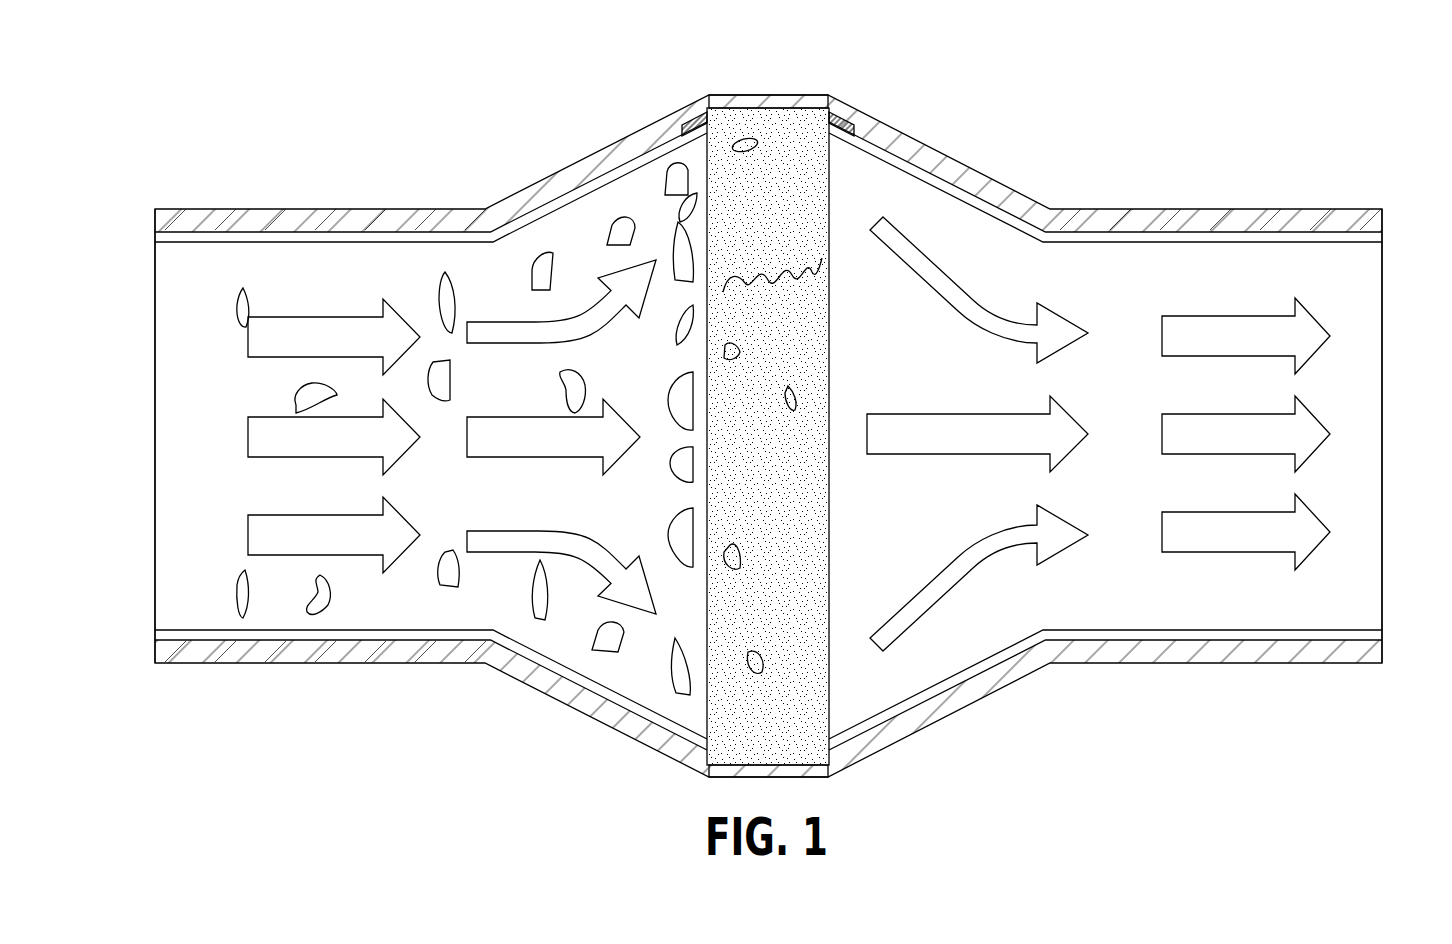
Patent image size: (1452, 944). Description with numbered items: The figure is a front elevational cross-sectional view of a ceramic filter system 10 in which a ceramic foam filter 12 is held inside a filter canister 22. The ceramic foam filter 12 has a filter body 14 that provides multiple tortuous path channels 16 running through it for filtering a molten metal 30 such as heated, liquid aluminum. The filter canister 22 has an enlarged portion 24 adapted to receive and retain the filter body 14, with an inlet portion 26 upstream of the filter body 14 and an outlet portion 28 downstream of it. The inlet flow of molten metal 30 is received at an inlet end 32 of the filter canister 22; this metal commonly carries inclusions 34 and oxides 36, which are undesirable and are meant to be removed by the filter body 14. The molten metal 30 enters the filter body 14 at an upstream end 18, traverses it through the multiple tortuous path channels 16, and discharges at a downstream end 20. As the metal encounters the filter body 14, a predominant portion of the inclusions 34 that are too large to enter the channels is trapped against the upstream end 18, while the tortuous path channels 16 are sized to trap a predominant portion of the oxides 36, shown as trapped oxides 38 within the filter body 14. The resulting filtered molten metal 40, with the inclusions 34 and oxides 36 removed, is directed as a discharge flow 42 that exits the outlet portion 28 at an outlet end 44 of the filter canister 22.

The ceramic filter system 10 is at (1158, 107).
The ceramic foam filter 12 is at (793, 105).
The filter body 14 is at (769, 145).
The multiple tortuous path channels 16 is at (822, 260).
The upstream end 18 is at (683, 125).
The downstream end 20 is at (843, 127).
The filter canister 22 is at (1045, 182).
The enlarged portion 24 is at (593, 167).
The inlet portion 26 is at (284, 222).
The outlet portion 28 is at (1122, 220).
The molten metal 30 is at (248, 537).
The inlet end 32 is at (146, 262).
The inclusions 34 is at (433, 357).
The oxides 36 is at (237, 592).
The trapped oxides 38 is at (734, 140).
The filtered molten metal 40 is at (902, 440).
The discharge flow 42 is at (1155, 258).
The outlet end 44 is at (1389, 258).